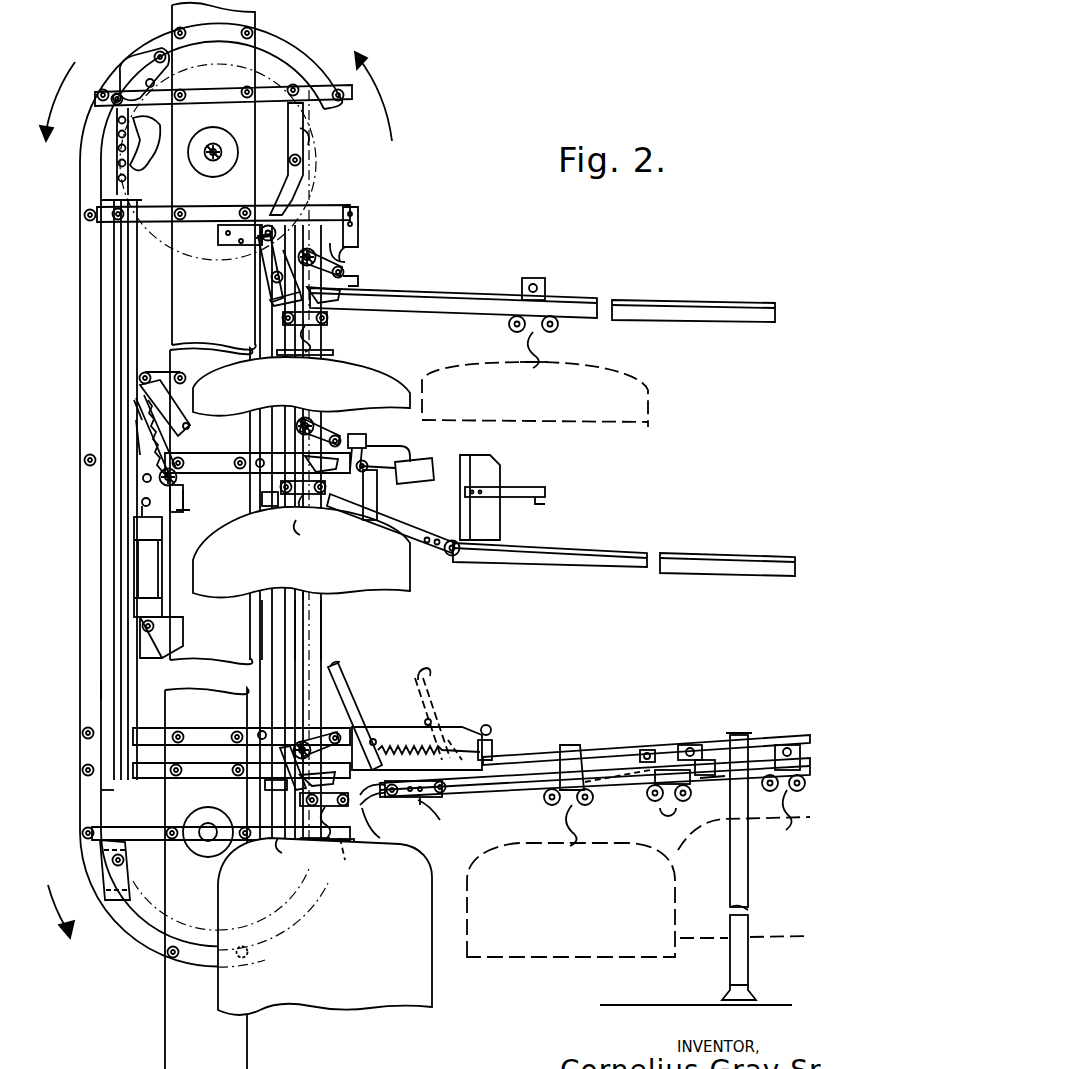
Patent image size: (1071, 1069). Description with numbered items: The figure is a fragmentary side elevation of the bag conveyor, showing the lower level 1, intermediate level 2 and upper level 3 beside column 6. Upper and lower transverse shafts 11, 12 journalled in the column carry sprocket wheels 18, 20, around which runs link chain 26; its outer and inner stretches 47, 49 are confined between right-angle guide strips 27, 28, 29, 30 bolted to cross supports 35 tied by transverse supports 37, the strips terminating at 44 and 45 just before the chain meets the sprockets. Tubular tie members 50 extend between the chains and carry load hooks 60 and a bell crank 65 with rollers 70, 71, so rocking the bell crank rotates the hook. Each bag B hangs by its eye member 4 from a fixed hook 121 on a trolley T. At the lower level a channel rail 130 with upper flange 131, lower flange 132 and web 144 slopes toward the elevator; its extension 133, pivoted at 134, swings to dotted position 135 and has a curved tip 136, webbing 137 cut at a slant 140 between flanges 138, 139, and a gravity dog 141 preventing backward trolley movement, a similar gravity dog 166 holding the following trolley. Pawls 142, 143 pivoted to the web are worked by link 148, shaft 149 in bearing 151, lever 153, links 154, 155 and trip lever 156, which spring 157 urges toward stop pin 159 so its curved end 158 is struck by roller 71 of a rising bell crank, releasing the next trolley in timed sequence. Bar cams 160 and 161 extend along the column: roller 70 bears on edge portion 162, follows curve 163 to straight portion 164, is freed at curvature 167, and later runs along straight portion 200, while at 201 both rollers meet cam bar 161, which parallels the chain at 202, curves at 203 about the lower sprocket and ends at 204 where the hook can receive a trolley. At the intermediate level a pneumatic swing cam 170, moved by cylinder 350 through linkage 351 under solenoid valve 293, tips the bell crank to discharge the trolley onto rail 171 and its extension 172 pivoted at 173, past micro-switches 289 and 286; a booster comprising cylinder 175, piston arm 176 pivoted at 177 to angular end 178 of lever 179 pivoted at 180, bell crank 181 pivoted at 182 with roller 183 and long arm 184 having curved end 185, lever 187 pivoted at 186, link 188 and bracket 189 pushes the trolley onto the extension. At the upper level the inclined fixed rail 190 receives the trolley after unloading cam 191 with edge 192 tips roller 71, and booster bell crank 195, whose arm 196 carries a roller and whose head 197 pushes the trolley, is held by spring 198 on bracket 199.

The lower level 1 is at (43, 789).
The intermediate level 2 is at (43, 477).
The upper level 3 is at (43, 237).
The eye member 4 is at (313, 842).
The supporting column 6 is at (200, 1054).
The upper transverse shaft 11 is at (216, 150).
The lower transverse shaft 12 is at (248, 695).
The upper sprocket wheel 18 is at (151, 170).
The lower sprocket wheel 20 is at (176, 921).
The link chain 26 is at (118, 152).
The chain guide bracket 27 is at (130, 686).
The chain guide bracket 28 is at (101, 686).
The chain guide bracket 29 is at (296, 633).
The chain guide bracket 30 is at (318, 621).
The cross support 35 is at (219, 70).
The transverse support 37 is at (350, 224).
The upper guide bracket termination 44 is at (106, 198).
The lower guide bracket termination 45 is at (101, 790).
The outer chain stretch 47 is at (100, 355).
The inner chain stretch 49 is at (306, 568).
The tubular tie member 50 is at (326, 222).
The load hook 60 is at (350, 296).
The bell crank 65 is at (357, 259).
The roller 70 is at (255, 637).
The roller 71 is at (356, 278).
The hook 121 is at (296, 521).
The fixed rail 130 is at (765, 760).
The upper flange 131 is at (705, 758).
The lower flange 132 is at (712, 784).
The rail extension 133 is at (420, 800).
The pivot 134 is at (460, 777).
The dotted line position 135 is at (432, 686).
The curved tip 136 is at (423, 665).
The webbing 137 is at (397, 795).
The upper flange 138 is at (420, 796).
The lower flange 139 is at (392, 810).
The slant cut 140 is at (371, 810).
The dog 141 is at (380, 832).
The pawl 142 is at (564, 796).
The pawl 143 is at (656, 790).
The web 144 is at (696, 760).
The link 148 is at (611, 757).
The shaft 149 is at (485, 740).
The bearing 151 is at (487, 728).
The lever 153 is at (489, 754).
The link 154 is at (536, 757).
The link 155 is at (450, 738).
The trip lever 156 is at (340, 690).
The tension spring 157 is at (397, 745).
The curved end 158 is at (343, 668).
The stop pin 159 is at (376, 738).
The bar cam 160 is at (296, 144).
The guide cam bar 161 is at (302, 52).
The lower edge portion 162 is at (300, 780).
The curve 163 is at (280, 784).
The straight portion 164 is at (270, 626).
The gravity dog 166 is at (598, 786).
The curvature 167 is at (262, 499).
The swing cam 170 is at (377, 498).
The rail 171 is at (607, 546).
The rail extension 172 is at (396, 534).
The pivot 173 is at (462, 556).
The cylinder 175 is at (152, 578).
The piston arm 176 is at (142, 513).
The pivot 177 is at (142, 501).
The angular end 178 is at (143, 488).
The lever 179 is at (175, 470).
The pivot 180 is at (183, 488).
The bell crank 181 is at (195, 405).
The pivot 182 is at (146, 372).
The roller 183 is at (181, 375).
The long arm 184 is at (140, 392).
The curved end 185 is at (187, 425).
The pivot 186 is at (145, 413).
The lever 187 is at (146, 428).
The link 188 is at (137, 440).
The bracket 189 is at (184, 511).
The fixed rail 190 is at (578, 302).
The unloading cam 191 is at (352, 241).
The cam edge 192 is at (352, 250).
The bell crank 195 is at (270, 270).
The arm 196 is at (285, 248).
The end 197 is at (277, 298).
The tension spring 198 is at (258, 240).
The bracket 199 is at (216, 238).
The straight portion 200 is at (303, 135).
The dotted line position 201 is at (153, 62).
The parallel portion 202 is at (80, 312).
The curved portion 203 is at (127, 937).
The extended end 204 is at (343, 855).
The micro-switch 286 is at (541, 502).
The micro-switch 289 is at (492, 508).
The solenoid valve 293 is at (366, 440).
The cylinder 350 is at (430, 486).
The linkage 351 is at (392, 458).
The bag B is at (364, 397).
The trolley T is at (322, 318).